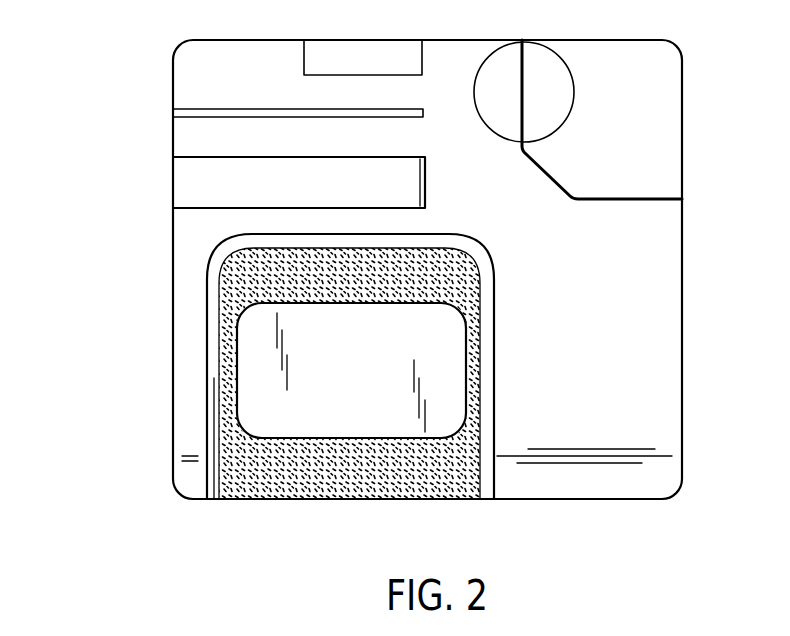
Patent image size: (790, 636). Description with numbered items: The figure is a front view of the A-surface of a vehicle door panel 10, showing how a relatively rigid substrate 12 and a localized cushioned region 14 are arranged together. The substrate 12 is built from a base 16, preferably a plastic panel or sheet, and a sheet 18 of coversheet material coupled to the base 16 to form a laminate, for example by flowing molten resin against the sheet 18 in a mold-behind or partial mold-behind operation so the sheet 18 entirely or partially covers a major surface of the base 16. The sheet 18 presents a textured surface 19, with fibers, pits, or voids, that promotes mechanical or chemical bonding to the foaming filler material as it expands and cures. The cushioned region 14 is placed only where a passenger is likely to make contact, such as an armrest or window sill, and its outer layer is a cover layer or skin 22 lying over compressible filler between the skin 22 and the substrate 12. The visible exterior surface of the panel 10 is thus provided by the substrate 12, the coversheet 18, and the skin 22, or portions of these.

The door panel 10 is at (128, 62).
The substrate 12 is at (208, 137).
The cushioned region 14 is at (255, 372).
The base 16 is at (551, 361).
The sheet 18 is at (243, 472).
The surface 19 is at (364, 481).
The skin 22 is at (364, 379).